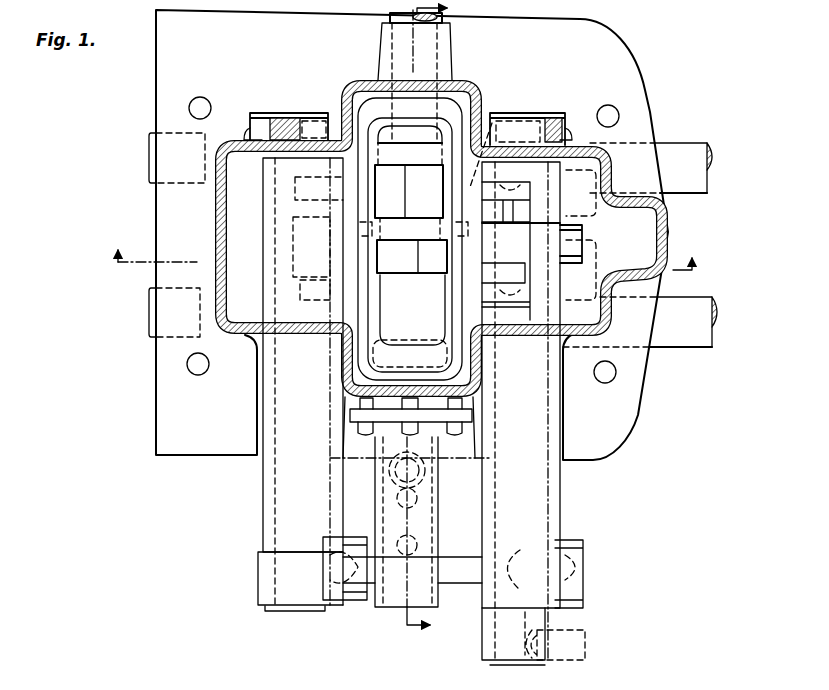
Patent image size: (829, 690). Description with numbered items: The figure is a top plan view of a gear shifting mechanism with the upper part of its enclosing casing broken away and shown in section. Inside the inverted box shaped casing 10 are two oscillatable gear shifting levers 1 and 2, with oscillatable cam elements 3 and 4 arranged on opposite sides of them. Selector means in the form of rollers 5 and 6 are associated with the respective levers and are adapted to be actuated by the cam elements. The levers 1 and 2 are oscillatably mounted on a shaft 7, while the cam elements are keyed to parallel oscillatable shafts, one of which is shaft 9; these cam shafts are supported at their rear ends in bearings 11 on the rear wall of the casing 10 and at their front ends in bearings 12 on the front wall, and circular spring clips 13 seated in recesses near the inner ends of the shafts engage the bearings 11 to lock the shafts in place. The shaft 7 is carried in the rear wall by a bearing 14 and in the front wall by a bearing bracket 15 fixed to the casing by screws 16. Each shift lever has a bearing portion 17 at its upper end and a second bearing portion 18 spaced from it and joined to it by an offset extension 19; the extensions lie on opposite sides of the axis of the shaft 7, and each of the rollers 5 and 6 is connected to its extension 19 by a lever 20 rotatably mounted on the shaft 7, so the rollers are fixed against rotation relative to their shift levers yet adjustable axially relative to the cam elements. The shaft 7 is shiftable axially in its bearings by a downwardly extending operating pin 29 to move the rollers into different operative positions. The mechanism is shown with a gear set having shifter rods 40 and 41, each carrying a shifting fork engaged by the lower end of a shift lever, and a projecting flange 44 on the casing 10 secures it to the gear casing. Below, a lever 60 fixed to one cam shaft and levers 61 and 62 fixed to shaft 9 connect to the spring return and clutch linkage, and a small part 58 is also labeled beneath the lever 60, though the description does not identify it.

The gear shifting lever 1 is at (405, 123).
The gear shifting lever 2 is at (403, 348).
The cam element 3 is at (247, 284).
The cam element 4 is at (560, 147).
The roller 5 is at (489, 118).
The roller 6 is at (453, 277).
The shaft 7 is at (440, 18).
The oscillatable shaft 9 is at (537, 665).
The casing 10 is at (441, 272).
The bearing 11 is at (266, 126).
The bearing 12 is at (258, 527).
The circular spring clip 13 is at (293, 113).
The bearing 14 is at (443, 60).
The bearing bracket 15 is at (439, 590).
The screw 16 is at (455, 440).
The bearing portion 17 is at (382, 127).
The bearing portion 18 is at (386, 105).
The offset extension 19 is at (462, 112).
The lever 20 is at (370, 265).
The operating pin 29 is at (433, 547).
The shifter rod 40 is at (712, 319).
The shifter rod 41 is at (708, 176).
The projecting flange 44 is at (637, 412).
The foot 58 is at (288, 611).
The lever 60 is at (262, 584).
The lever 61 is at (585, 575).
The lever 62 is at (590, 646).